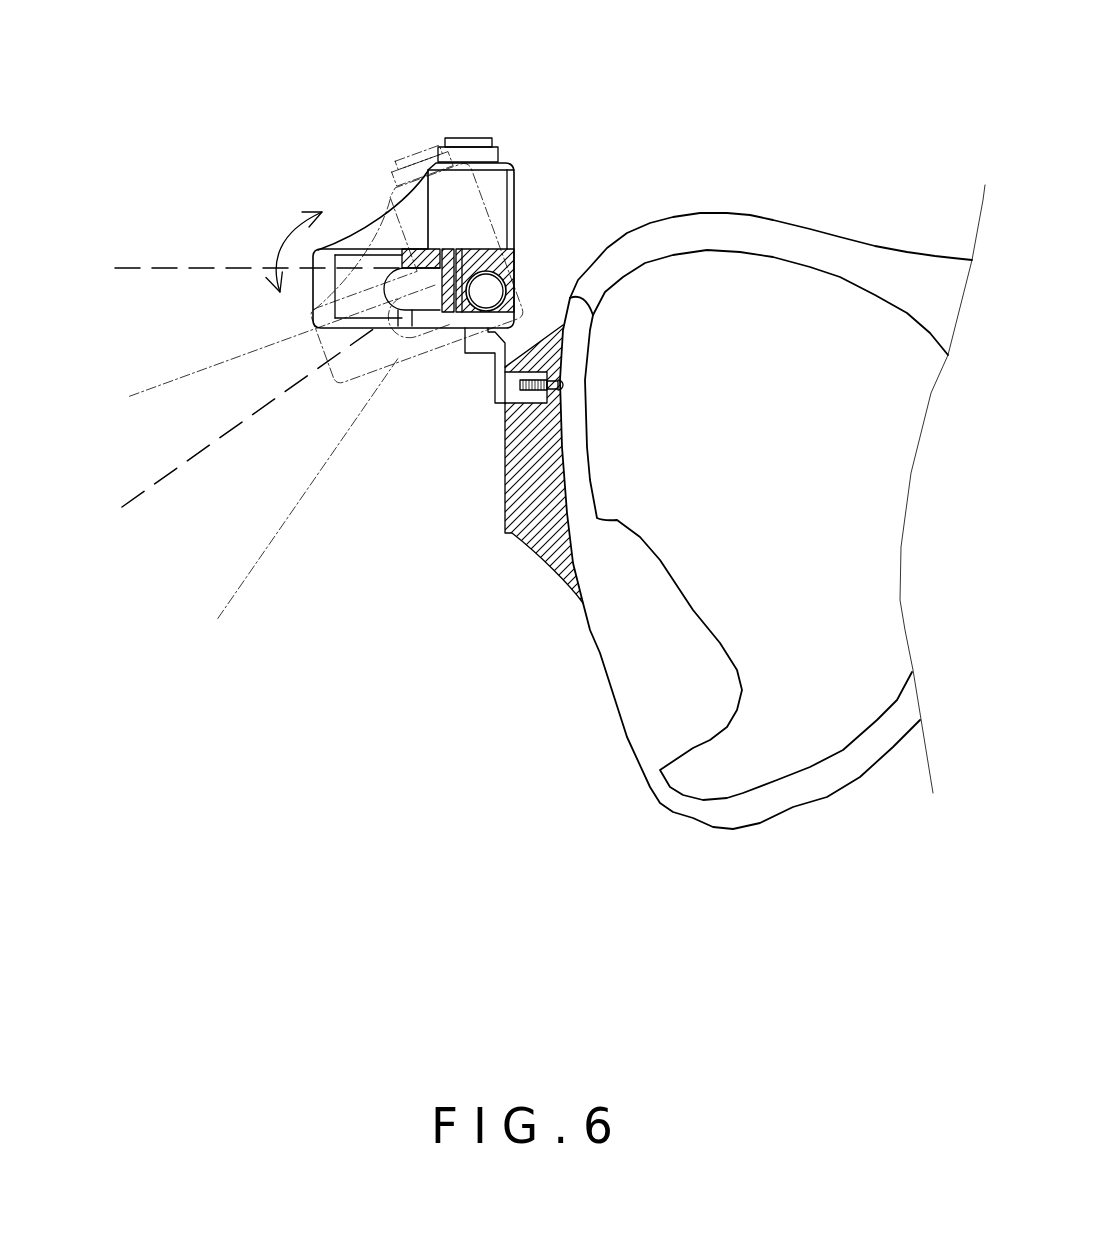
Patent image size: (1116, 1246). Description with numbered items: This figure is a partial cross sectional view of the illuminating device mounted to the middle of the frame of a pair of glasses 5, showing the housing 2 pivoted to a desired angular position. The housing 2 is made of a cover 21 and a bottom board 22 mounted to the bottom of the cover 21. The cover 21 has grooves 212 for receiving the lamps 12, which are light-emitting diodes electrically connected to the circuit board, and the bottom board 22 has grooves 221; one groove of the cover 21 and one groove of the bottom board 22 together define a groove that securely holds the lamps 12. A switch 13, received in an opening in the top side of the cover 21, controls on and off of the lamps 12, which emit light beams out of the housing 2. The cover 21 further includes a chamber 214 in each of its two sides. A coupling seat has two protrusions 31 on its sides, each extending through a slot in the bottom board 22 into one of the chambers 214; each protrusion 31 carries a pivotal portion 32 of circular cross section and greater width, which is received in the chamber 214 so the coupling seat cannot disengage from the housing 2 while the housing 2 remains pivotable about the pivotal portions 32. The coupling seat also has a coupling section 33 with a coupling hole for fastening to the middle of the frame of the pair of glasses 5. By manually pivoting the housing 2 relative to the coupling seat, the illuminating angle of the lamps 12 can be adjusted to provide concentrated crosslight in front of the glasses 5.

The housing 2 is at (330, 181).
The cover 21 is at (373, 222).
The grooves 212 is at (417, 252).
The grooves 221 is at (405, 326).
The bottom board 22 is at (448, 320).
The lamps 12 is at (388, 296).
The switch 13 is at (468, 138).
The chamber 214 is at (474, 256).
The pivotal portion 32 is at (486, 291).
The protrusions 31 is at (483, 337).
The coupling section 33 is at (517, 397).
The pair of glasses 5 is at (627, 252).